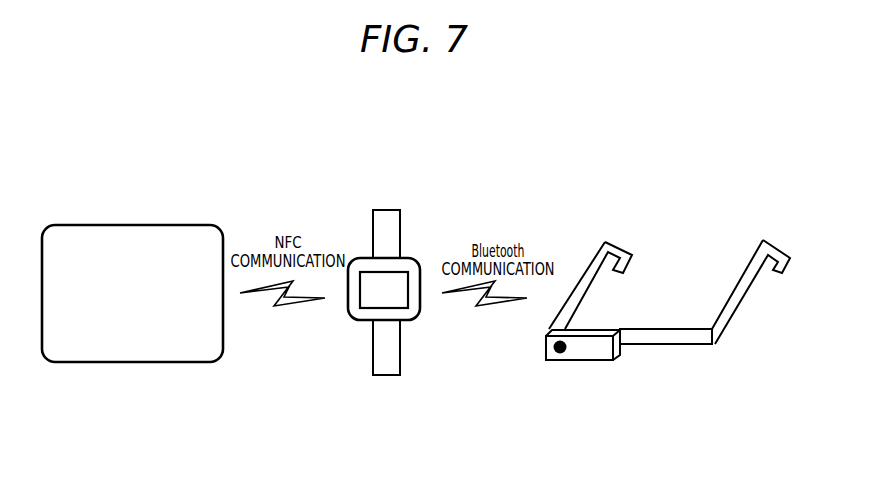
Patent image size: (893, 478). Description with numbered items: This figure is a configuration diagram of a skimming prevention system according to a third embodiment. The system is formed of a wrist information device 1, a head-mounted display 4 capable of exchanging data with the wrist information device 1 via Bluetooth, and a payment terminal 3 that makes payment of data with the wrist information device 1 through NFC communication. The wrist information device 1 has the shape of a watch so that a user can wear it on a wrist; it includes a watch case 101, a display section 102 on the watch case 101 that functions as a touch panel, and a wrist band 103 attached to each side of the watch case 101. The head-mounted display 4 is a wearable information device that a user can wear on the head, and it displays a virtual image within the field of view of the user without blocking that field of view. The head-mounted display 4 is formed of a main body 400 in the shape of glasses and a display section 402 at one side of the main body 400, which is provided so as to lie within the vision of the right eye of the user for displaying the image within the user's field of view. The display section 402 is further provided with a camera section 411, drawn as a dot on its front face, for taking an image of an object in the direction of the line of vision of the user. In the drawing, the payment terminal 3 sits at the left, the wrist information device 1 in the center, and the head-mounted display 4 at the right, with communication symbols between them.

The wrist information device 1 is at (369, 249).
The payment terminal 3 is at (143, 197).
The head-mounted display 4 is at (660, 286).
The watch case 101 is at (410, 259).
The display section 102 is at (376, 298).
The wrist band 103 is at (382, 238).
The main body 400 is at (665, 360).
The display section 402 is at (575, 380).
The camera section 411 is at (558, 361).